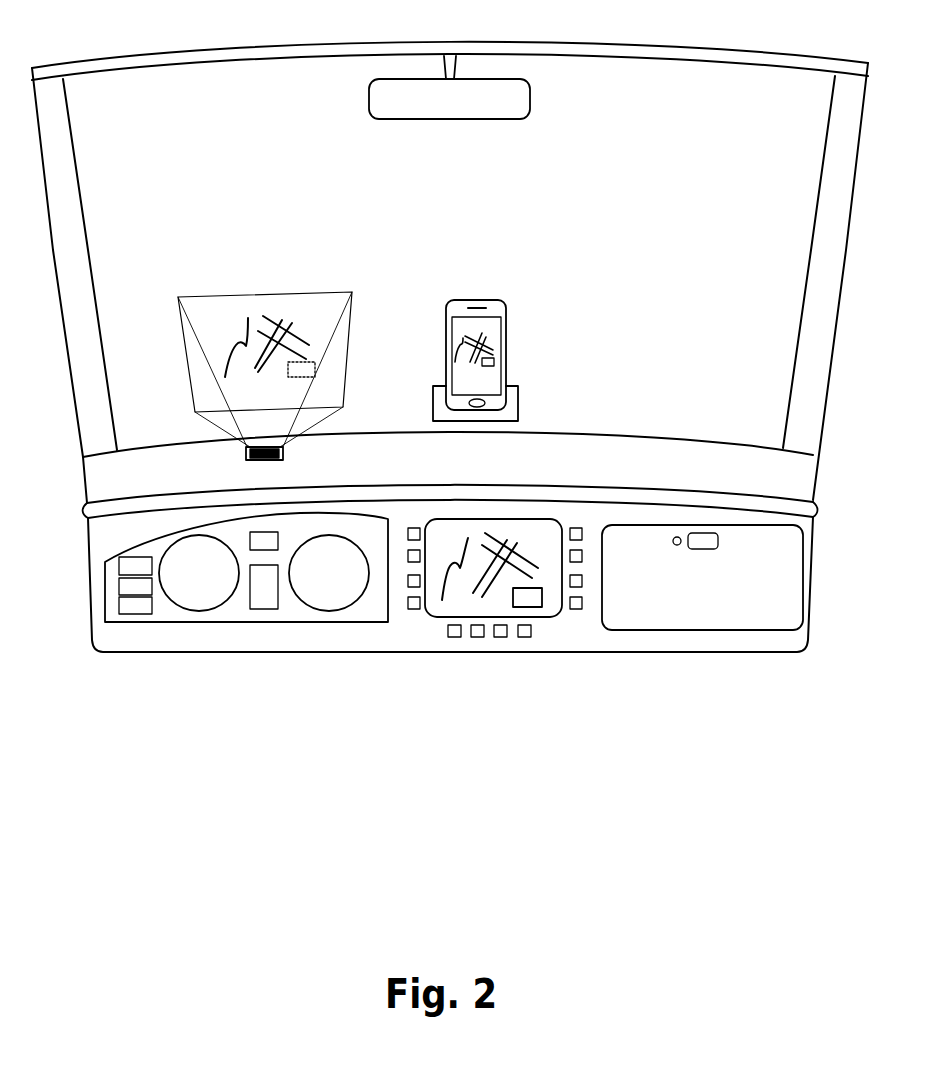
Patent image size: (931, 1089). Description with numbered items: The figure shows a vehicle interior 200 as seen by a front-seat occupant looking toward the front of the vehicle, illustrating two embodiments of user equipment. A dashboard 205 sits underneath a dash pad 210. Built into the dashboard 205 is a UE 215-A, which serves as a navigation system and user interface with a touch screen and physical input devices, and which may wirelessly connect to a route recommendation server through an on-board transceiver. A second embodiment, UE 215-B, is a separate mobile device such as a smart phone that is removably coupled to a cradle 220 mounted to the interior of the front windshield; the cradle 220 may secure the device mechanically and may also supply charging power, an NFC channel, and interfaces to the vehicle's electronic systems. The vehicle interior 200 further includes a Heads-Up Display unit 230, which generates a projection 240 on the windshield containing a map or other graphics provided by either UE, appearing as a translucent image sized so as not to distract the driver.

The vehicle interior 200 is at (105, 24).
The dashboard 205 is at (128, 633).
The dash pad 210 is at (668, 452).
The UE 215-A is at (445, 608).
The UE 215-B is at (510, 325).
The cradle 220 is at (520, 405).
The Heads-Up Display (HUD) unit 230 is at (283, 457).
The projection 240 is at (287, 292).